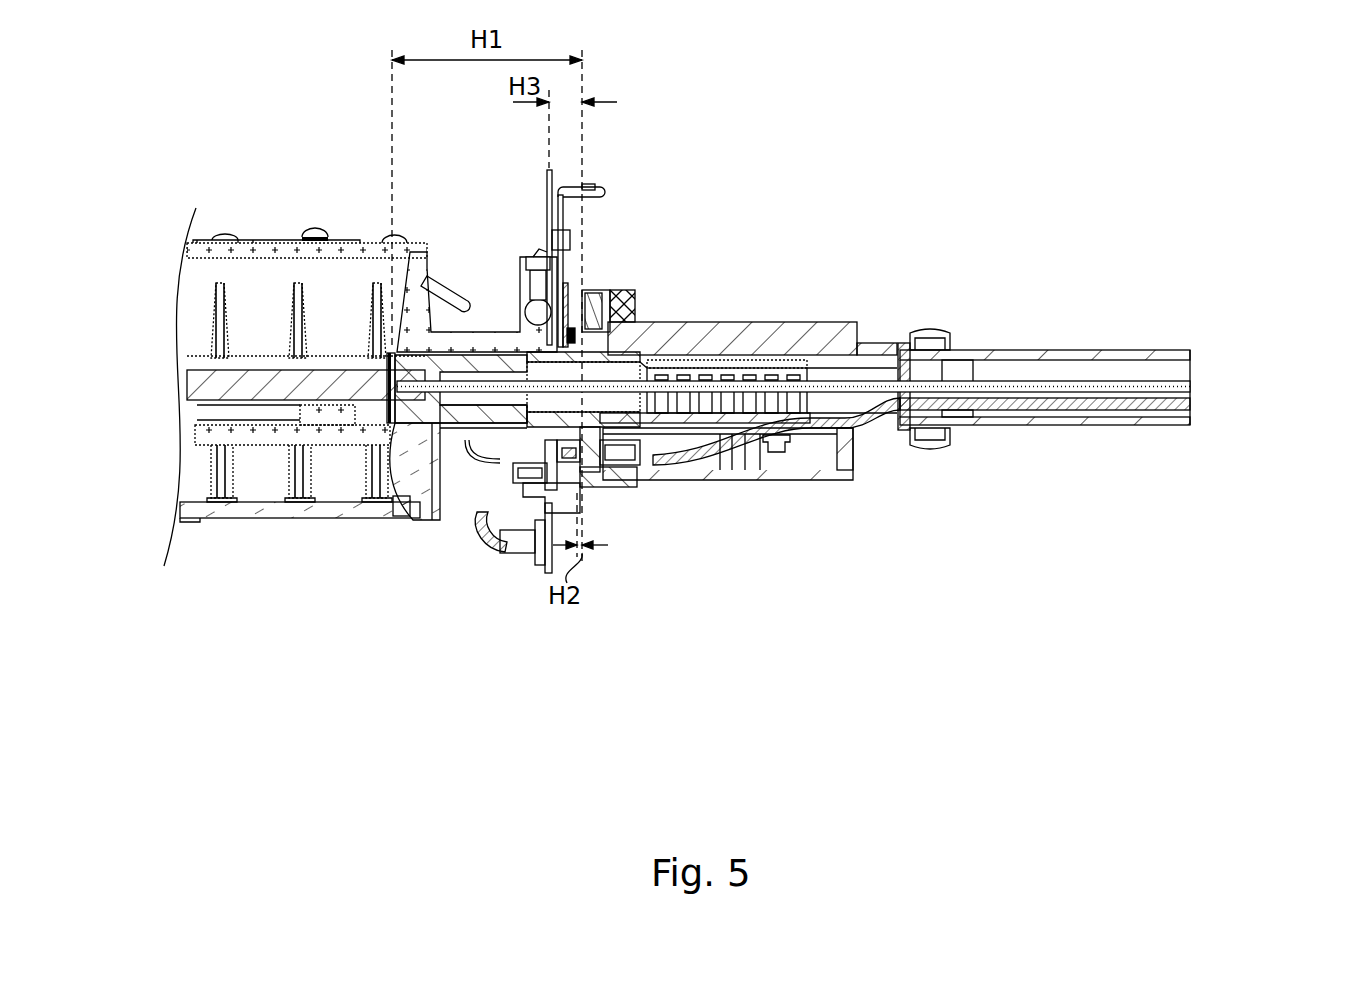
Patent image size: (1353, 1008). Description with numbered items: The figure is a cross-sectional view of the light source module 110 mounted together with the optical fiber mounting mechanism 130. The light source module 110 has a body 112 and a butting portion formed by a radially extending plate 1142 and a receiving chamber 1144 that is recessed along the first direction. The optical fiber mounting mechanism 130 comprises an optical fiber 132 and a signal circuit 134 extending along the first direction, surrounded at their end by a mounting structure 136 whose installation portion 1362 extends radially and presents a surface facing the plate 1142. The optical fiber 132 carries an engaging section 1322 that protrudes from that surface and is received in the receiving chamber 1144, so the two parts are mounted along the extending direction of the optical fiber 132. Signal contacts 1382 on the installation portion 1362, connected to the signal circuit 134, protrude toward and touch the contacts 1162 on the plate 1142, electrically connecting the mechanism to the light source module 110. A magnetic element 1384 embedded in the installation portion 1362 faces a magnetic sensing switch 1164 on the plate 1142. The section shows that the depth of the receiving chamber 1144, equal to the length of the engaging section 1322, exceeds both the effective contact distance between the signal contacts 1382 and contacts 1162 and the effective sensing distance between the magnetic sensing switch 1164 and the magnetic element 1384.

The light source module 110 is at (309, 537).
The body 112 is at (483, 347).
The plate 1142 is at (573, 185).
The receiving chamber 1144 is at (466, 405).
The contacts 1162 is at (577, 455).
The magnetic sensing switch 1164 is at (532, 312).
The optical fiber mounting mechanism 130 is at (872, 518).
The optical fiber 132 is at (1192, 383).
The signal circuit 134 is at (1192, 402).
The mounting structure 136 is at (718, 337).
The engaging section 1322 is at (433, 425).
The installation portion 1362 is at (623, 297).
The signal contacts 1382 is at (590, 458).
The magnetic element 1384 is at (595, 297).